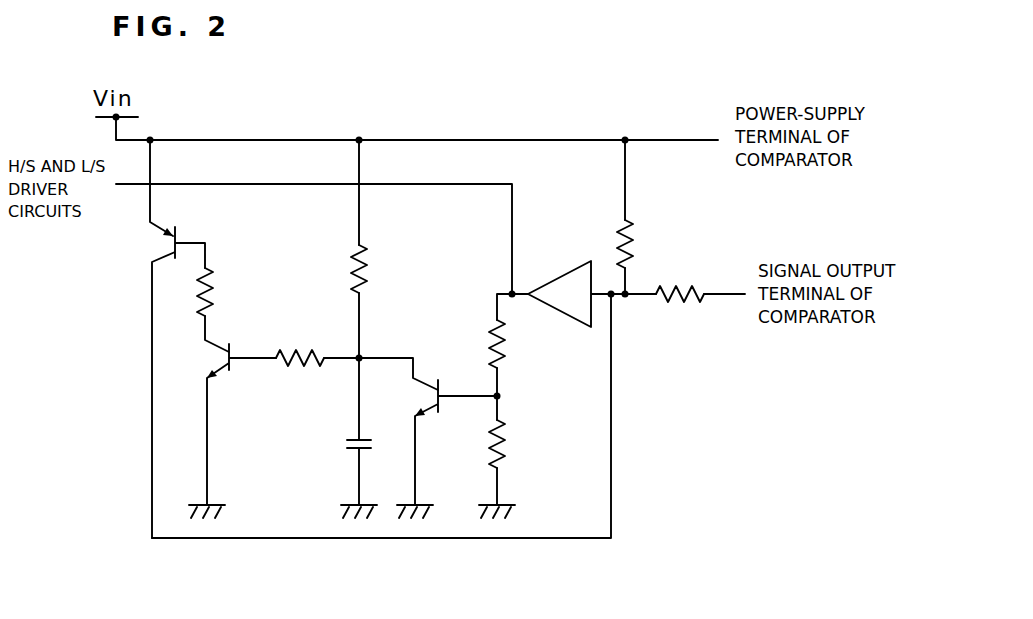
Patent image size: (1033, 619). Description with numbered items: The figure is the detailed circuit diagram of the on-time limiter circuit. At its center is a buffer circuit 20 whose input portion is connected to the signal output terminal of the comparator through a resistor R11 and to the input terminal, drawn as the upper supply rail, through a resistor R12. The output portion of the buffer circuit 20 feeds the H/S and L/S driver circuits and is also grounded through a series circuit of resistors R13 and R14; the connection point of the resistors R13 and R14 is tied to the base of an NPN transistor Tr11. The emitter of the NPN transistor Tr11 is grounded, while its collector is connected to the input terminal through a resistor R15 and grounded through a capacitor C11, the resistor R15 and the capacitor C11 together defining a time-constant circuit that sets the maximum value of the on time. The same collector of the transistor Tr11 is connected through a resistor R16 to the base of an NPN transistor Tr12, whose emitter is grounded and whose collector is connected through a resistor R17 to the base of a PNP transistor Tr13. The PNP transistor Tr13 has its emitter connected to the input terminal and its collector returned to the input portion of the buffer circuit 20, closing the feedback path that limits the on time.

The buffer circuit 20 is at (573, 271).
The NPN transistor Tr11 is at (447, 449).
The NPN transistor Tr12 is at (232, 431).
The PNP transistor Tr13 is at (178, 339).
The resistor R11 is at (700, 308).
The resistor R12 is at (647, 217).
The resistor R13 is at (518, 347).
The resistor R14 is at (513, 457).
The resistor R15 is at (384, 249).
The resistor R16 is at (357, 373).
The resistor R17 is at (227, 310).
The capacitor C11 is at (352, 438).